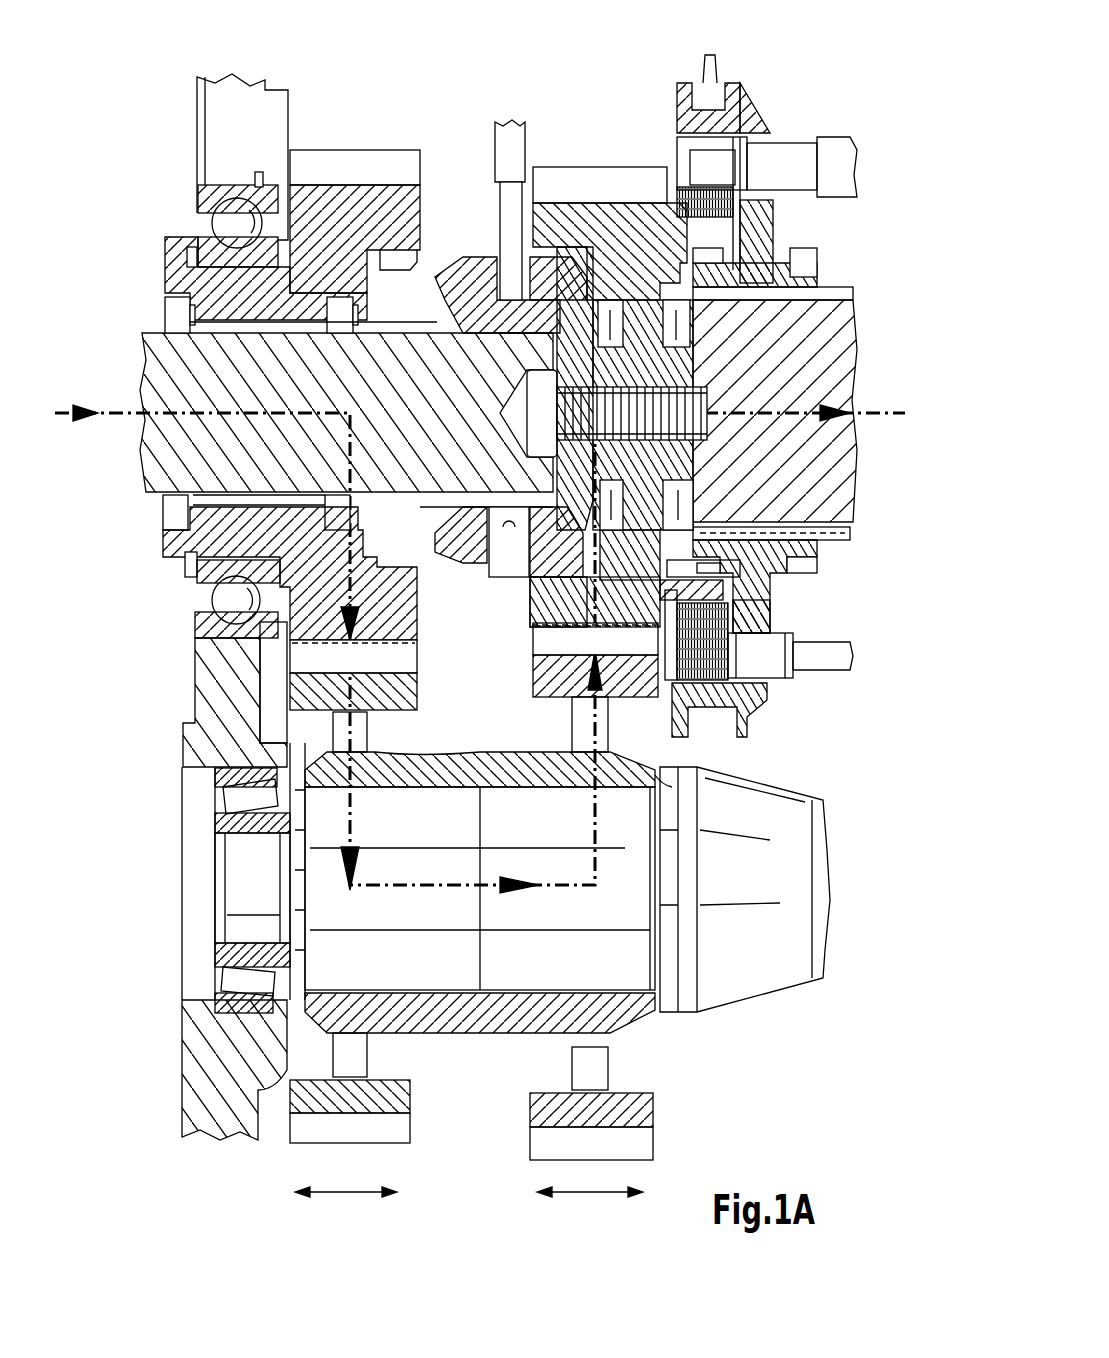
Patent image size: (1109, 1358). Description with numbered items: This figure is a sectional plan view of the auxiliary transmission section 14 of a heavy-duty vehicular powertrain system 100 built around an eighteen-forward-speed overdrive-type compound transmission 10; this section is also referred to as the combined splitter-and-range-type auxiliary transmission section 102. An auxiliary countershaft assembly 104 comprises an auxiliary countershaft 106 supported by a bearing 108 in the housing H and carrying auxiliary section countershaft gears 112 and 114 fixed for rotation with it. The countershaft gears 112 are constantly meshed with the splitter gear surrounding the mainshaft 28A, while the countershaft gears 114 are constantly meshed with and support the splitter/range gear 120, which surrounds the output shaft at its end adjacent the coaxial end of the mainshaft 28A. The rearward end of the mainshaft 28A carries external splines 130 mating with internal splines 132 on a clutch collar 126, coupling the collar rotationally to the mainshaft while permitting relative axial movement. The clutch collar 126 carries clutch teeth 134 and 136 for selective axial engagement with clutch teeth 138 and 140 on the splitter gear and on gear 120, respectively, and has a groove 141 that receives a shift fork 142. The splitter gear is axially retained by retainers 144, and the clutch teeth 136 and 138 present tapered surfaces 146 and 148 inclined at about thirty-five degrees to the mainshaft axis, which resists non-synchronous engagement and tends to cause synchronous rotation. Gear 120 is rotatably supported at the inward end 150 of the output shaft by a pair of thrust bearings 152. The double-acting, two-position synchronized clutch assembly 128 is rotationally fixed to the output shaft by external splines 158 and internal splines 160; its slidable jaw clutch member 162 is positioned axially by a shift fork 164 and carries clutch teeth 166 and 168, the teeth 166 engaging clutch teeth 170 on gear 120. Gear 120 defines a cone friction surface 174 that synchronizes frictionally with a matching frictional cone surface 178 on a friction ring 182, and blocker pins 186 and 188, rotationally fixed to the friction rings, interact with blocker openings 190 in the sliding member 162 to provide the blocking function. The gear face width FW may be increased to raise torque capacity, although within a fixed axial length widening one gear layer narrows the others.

The compound transmission 10 is at (470, 82).
The auxiliary section 14 is at (485, 118).
The mainshaft 28A is at (346, 396).
The heavy-duty vehicular powertrain system 100 is at (183, 145).
The auxiliary transmission section 102 is at (292, 188).
The auxiliary countershaft assembly 104 is at (787, 1005).
The auxiliary countershaft 106 is at (420, 950).
The bearing 108 is at (215, 805).
The auxiliary section countershaft gear 112 is at (420, 688).
The auxiliary section countershaft gear 114 is at (553, 672).
The splitter/range gear 120 is at (545, 631).
The clutch collar 126 is at (463, 237).
The synchronized clutch assembly 128 is at (774, 157).
The external splines 130 is at (375, 330).
The internal splines 132 is at (503, 335).
The clutch teeth 134 is at (465, 565).
The clutch teeth 136 is at (530, 553).
The clutch teeth 138 is at (395, 258).
The clutch teeth 140 is at (610, 233).
The groove 141 is at (515, 490).
The shift fork 142 is at (512, 160).
The retainers 144 is at (173, 313).
The tapered surface 146 is at (410, 560).
The tapered surface 148 is at (442, 565).
The inward end 150 is at (585, 333).
The thrust bearings 152 is at (628, 342).
The external splines 158 is at (835, 535).
The internal splines 160 is at (783, 530).
The slidable jaw clutch member 162 is at (757, 247).
The shift fork 164 is at (706, 78).
The clutch teeth 166 is at (700, 280).
The clutch teeth 168 is at (803, 263).
The clutch teeth 170 is at (687, 563).
The cone friction surface 174 is at (673, 208).
The frictional cone surface 178 is at (723, 240).
The friction ring 182 is at (687, 662).
The blocker pin 186 is at (838, 152).
The blocker pin 188 is at (762, 652).
The blocker openings 190 is at (777, 138).
The housing H is at (220, 1060).
The gear face width FW is at (345, 1196).